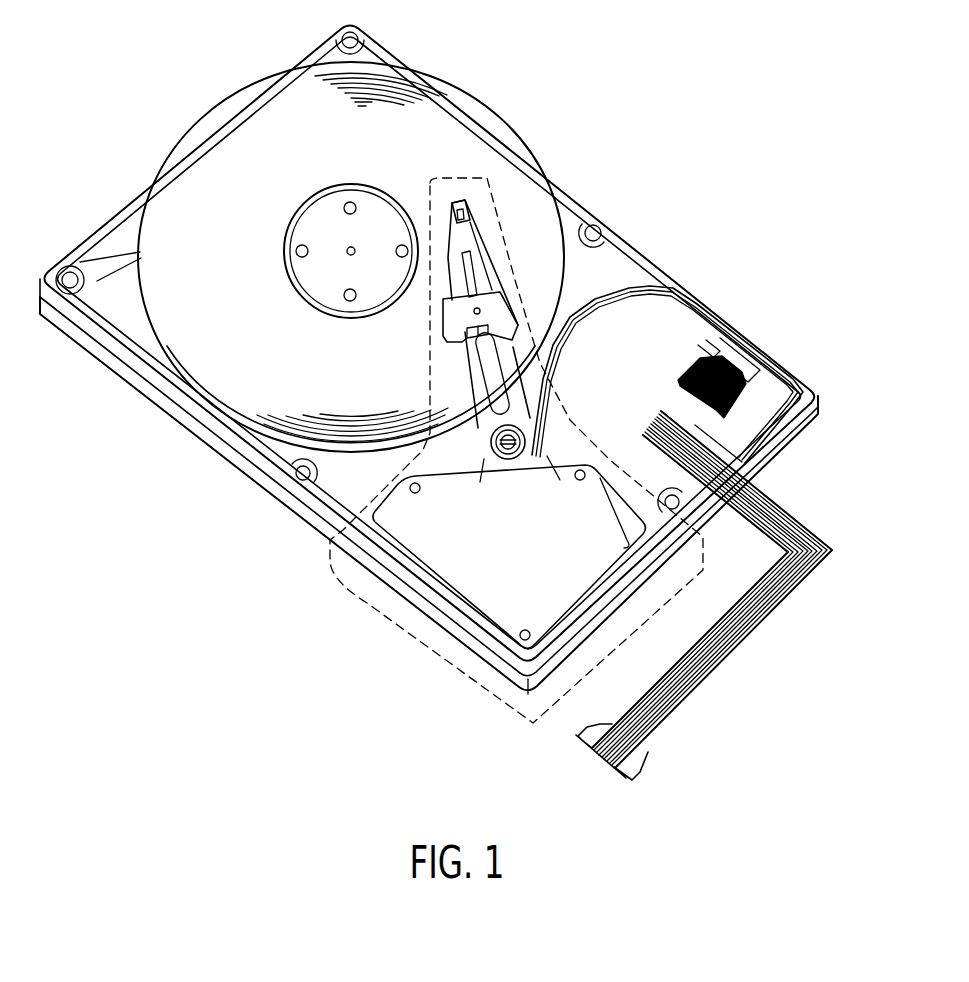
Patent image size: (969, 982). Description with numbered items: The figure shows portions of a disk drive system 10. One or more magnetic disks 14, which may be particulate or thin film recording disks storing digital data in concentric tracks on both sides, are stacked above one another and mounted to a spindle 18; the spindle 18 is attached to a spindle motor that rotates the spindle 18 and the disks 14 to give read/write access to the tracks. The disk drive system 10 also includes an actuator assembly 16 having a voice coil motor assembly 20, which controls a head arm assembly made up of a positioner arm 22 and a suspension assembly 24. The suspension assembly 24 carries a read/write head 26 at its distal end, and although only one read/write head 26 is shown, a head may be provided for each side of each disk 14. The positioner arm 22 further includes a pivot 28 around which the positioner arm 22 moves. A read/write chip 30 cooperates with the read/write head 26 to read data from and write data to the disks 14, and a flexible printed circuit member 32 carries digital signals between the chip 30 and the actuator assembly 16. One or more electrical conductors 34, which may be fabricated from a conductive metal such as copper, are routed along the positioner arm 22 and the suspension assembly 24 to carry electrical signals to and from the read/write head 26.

The disk drive system 10 is at (531, 80).
The magnetic disk 14 is at (210, 400).
The actuator assembly 16 is at (365, 601).
The spindle 18 is at (307, 304).
The voice coil motor assembly 20 is at (493, 603).
The positioner arm 22 is at (473, 368).
The suspension assembly 24 is at (464, 235).
The read/write head 26 is at (460, 210).
The pivot 28 is at (490, 442).
The read/write chip 30 is at (746, 392).
The flexible printed circuit member 32 is at (645, 290).
The electrical conductors 34 is at (485, 278).